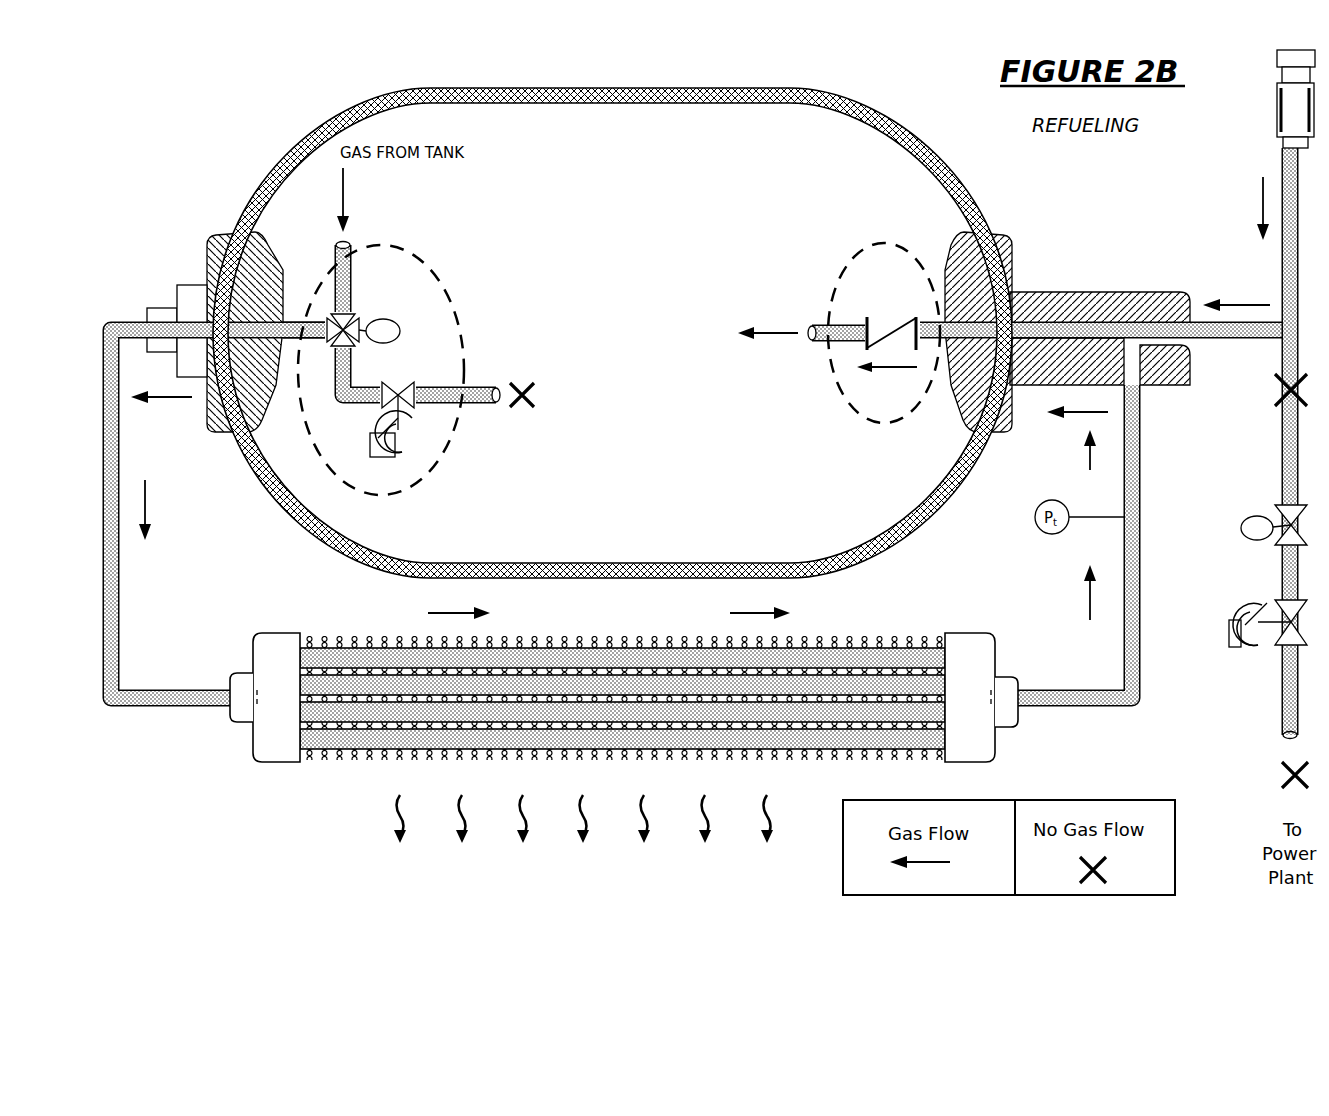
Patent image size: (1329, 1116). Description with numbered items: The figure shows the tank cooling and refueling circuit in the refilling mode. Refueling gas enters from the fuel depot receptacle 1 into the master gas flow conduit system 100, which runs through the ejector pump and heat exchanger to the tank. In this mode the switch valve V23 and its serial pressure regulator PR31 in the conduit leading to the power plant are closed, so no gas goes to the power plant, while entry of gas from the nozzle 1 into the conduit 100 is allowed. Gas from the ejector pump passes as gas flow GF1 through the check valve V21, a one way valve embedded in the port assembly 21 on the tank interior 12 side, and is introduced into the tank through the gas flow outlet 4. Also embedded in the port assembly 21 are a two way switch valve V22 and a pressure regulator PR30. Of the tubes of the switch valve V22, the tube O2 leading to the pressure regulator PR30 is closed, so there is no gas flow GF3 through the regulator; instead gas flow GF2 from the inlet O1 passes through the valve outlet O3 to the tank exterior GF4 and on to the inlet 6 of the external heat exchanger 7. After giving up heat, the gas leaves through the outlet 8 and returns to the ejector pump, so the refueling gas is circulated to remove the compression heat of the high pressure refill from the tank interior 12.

The port assembly 21 is at (222, 232).
The tank exterior gas flow GF4 is at (131, 322).
The valve outlet O3 is at (319, 300).
The gas flow from inlet O1 GF2 is at (348, 246).
The inlet O1 is at (347, 318).
The two way switch valve V22 is at (396, 324).
The valve tube to pressure regulator O2 is at (388, 350).
The gas flow through pressure regulator GF3 is at (500, 395).
The pressure regulator PR30 is at (413, 440).
The tank interior 12 is at (674, 494).
The gas flow outlet 4 is at (773, 337).
The gas flow into the tank GF1 is at (812, 328).
The check valve V21 is at (886, 316).
The master gas flow conduit system 100 is at (1283, 322).
The fuel depot receptacle 1 is at (1278, 112).
The switch valve V23 is at (1288, 516).
The pressure regulator PR31 is at (1238, 652).
The inlet 6 is at (215, 706).
The heat exchanger 7 is at (330, 754).
The outlet 8 is at (1040, 697).